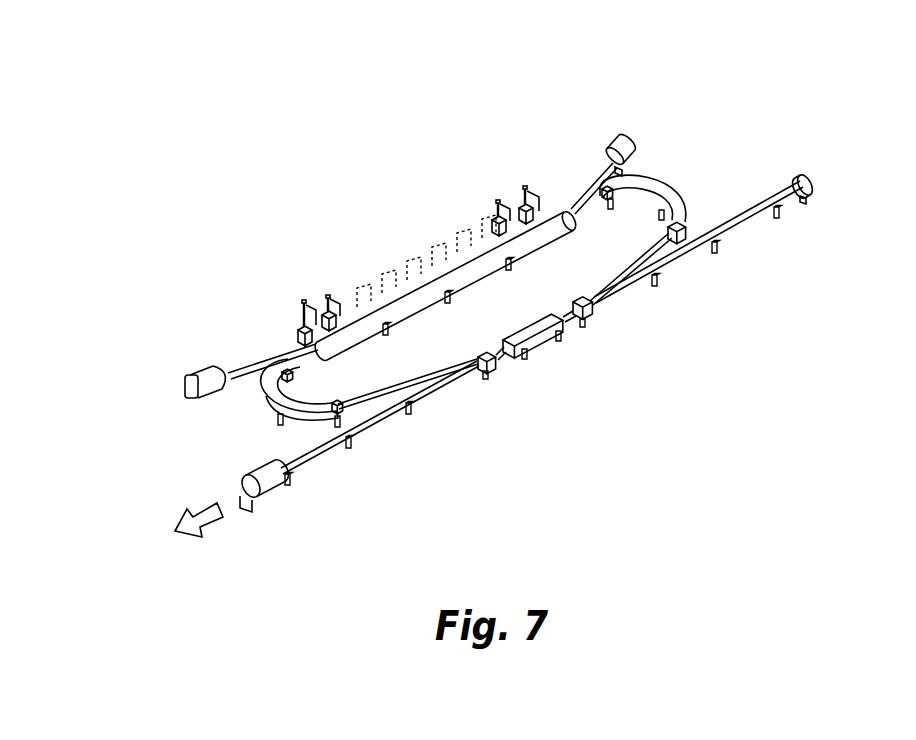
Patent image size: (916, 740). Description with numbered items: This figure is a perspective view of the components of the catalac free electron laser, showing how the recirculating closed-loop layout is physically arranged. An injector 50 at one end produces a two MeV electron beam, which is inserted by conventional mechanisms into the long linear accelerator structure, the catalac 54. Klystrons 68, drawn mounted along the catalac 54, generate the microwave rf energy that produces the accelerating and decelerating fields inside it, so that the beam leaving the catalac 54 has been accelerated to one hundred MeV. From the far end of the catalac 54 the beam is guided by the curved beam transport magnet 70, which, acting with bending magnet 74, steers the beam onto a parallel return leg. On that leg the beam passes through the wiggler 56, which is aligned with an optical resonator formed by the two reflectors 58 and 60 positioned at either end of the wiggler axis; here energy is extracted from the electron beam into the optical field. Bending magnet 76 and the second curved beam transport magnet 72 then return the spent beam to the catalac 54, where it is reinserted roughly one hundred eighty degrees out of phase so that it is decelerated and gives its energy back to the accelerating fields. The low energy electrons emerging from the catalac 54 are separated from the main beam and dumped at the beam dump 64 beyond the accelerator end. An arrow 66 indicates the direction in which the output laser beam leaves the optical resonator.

The injector 50 is at (188, 381).
The catalac 54 is at (437, 270).
The wiggler 56 is at (548, 342).
The reflector 58 is at (262, 495).
The reflector 60 is at (812, 193).
The beam dump 64 is at (620, 140).
The output beam direction arrow 66 is at (190, 531).
The klystrons 68 is at (328, 301).
The beam transport magnet 70 is at (676, 198).
The beam transport magnet 72 is at (270, 406).
The bending magnet 74 is at (598, 308).
The bending magnet 76 is at (477, 372).